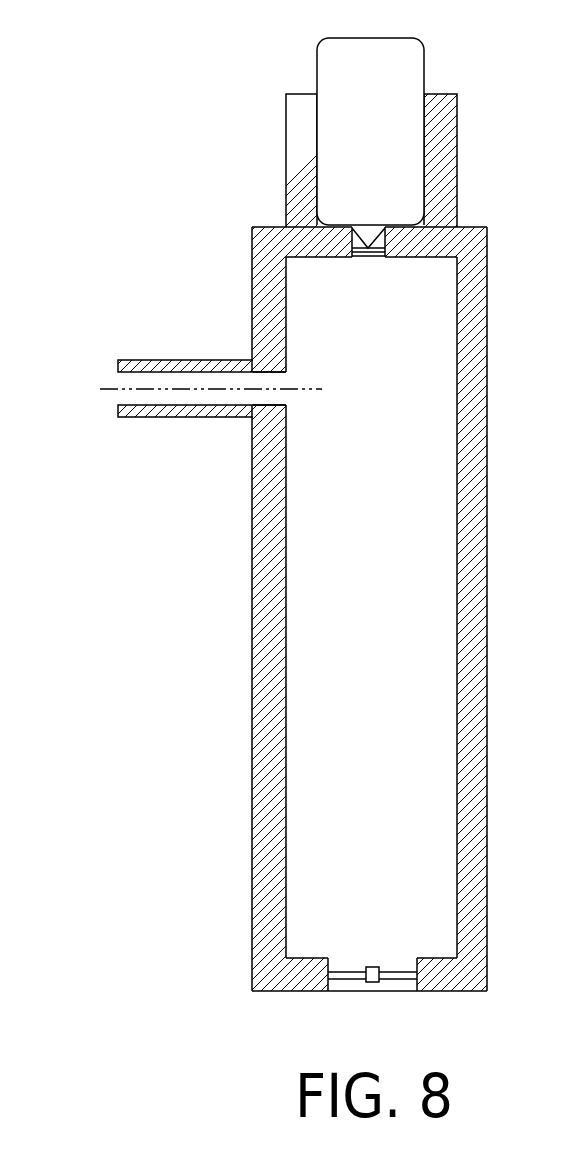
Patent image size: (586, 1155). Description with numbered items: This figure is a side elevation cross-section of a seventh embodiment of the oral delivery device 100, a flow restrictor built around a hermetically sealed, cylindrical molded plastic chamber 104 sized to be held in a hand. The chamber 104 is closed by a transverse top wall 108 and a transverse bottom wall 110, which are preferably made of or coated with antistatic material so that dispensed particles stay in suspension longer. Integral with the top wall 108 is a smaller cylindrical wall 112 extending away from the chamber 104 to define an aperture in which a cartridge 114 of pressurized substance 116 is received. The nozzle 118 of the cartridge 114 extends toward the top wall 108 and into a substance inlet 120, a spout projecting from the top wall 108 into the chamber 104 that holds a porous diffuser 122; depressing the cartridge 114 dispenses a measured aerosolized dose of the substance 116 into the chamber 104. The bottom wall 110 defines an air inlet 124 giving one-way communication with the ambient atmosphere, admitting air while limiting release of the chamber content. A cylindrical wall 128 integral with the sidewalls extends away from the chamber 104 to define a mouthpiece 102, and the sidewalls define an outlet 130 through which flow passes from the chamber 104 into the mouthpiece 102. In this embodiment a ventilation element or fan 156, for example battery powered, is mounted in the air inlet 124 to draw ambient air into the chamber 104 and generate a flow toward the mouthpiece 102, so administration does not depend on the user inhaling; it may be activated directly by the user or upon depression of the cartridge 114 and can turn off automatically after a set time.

The fluid delivery device 100 is at (160, 240).
The mouthpiece 102 is at (188, 418).
The chamber 104 is at (488, 542).
The transverse top wall 108 is at (476, 231).
The transverse bottom wall 110 is at (440, 979).
The cylindrical wall 112 is at (286, 157).
The cartridge 114 is at (425, 52).
The pressurized substance 116 is at (387, 143).
The nozzle 118 is at (355, 228).
The substance inlet 120 is at (351, 250).
The diffuser 122 is at (372, 258).
The air inlet 124 is at (360, 991).
The cylindrical wall 128 is at (192, 360).
The outlet 130 is at (286, 373).
The ventilation element 156 is at (375, 967).